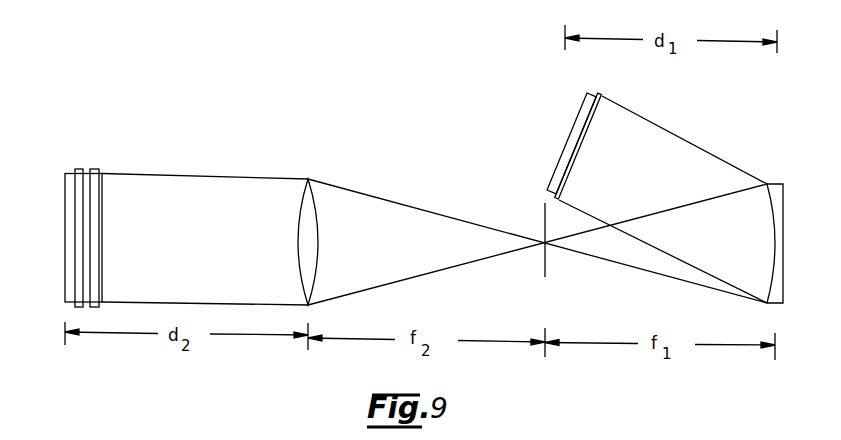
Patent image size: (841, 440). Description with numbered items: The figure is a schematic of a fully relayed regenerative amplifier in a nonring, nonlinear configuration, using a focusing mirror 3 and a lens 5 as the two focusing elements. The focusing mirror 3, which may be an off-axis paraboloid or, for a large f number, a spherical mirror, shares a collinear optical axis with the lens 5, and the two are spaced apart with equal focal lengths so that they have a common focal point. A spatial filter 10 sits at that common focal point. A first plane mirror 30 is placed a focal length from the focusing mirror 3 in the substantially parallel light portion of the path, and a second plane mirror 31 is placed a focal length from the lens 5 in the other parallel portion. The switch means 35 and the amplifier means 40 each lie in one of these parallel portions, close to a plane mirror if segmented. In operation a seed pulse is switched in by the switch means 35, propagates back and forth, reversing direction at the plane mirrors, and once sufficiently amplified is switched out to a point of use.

The focusing mirror 3 is at (785, 240).
The lens 5 is at (308, 179).
The spatial filter 10 is at (546, 220).
The first plane mirror 30 is at (576, 126).
The second plane mirror 31 is at (65, 210).
The switch means 35 is at (79, 170).
The amplifier means 40 is at (97, 170).